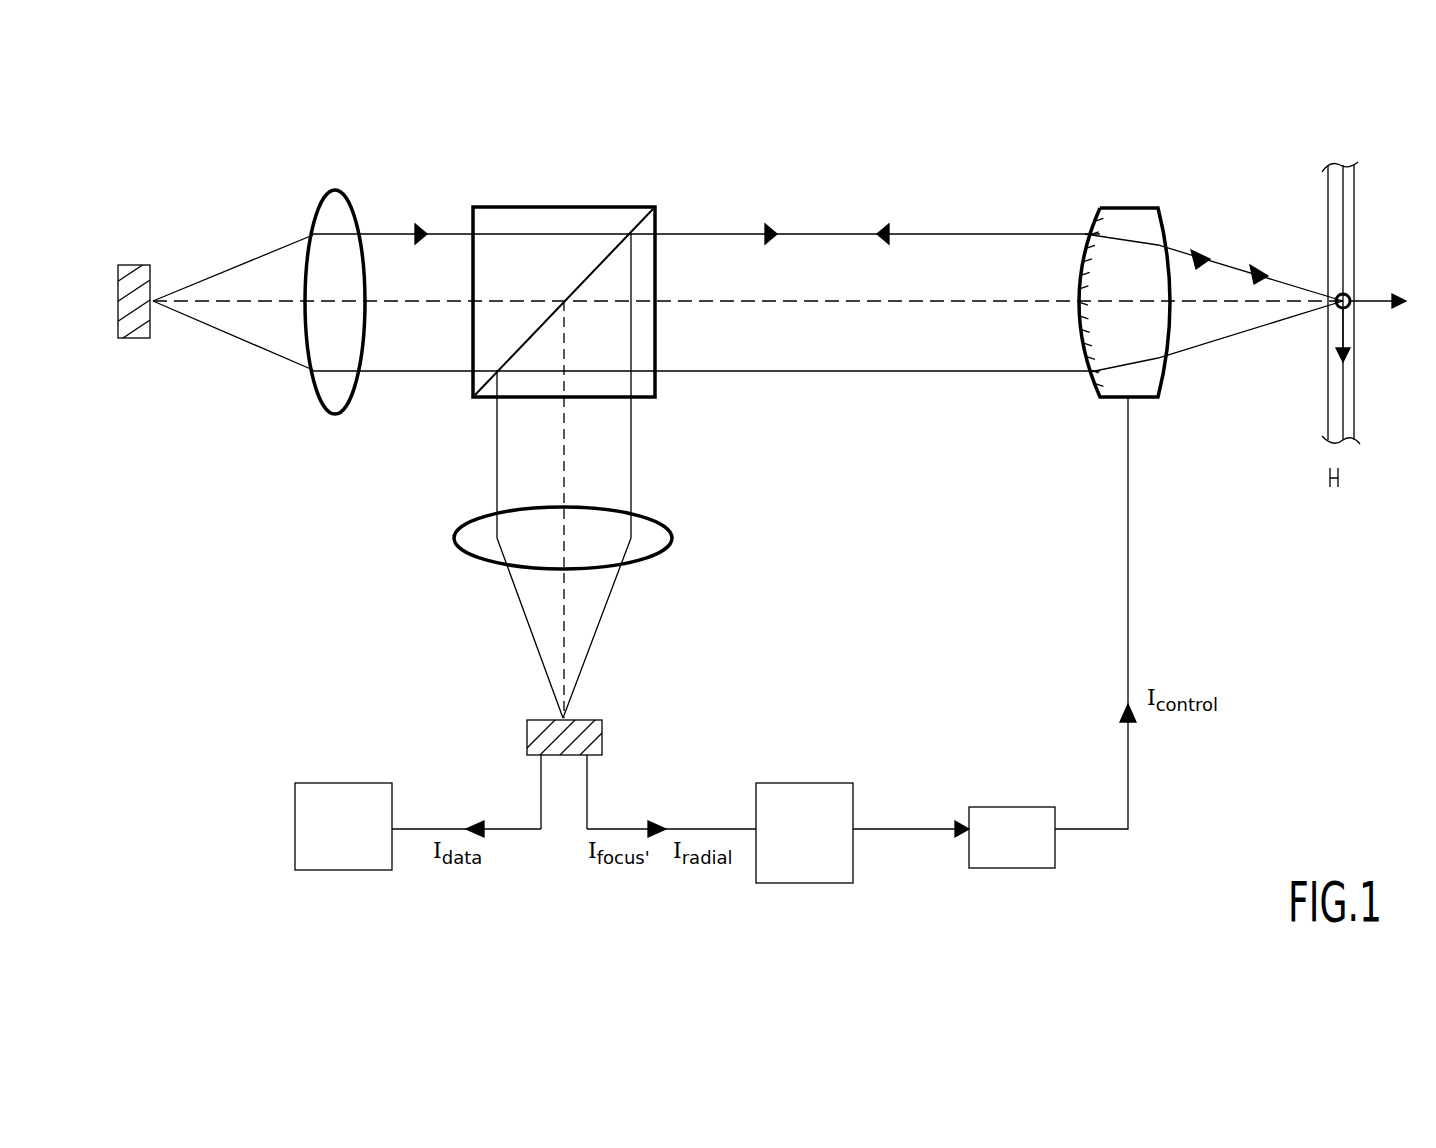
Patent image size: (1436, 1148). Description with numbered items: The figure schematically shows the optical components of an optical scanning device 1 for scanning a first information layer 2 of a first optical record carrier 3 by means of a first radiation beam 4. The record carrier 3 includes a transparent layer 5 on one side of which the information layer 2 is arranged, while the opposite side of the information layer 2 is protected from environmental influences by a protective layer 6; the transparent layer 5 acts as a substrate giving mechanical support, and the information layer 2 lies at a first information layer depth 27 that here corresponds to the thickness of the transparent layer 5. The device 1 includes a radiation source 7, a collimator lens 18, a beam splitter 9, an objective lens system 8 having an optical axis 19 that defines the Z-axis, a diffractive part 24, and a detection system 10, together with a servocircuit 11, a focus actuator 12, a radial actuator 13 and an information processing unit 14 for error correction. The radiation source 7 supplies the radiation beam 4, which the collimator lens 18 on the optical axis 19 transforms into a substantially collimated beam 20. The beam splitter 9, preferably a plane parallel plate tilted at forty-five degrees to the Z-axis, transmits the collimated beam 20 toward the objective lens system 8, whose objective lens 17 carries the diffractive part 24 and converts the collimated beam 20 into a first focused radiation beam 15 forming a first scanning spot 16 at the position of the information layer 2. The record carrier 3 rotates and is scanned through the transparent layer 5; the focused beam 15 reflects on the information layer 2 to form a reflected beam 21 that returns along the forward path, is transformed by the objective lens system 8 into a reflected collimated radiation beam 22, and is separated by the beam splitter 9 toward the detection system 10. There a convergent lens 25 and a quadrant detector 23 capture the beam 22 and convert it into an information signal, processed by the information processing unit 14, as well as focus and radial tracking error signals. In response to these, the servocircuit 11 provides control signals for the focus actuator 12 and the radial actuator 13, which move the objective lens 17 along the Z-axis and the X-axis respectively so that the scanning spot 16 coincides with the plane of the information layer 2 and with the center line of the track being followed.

The optical scanning device 1 is at (127, 138).
The first information layer 2 is at (1343, 196).
The first optical record carrier 3 is at (1414, 139).
The first radiation beam 4 is at (225, 270).
The transparent layer 5 is at (1334, 239).
The protective layer 6 is at (1349, 410).
The radiation source 7 is at (133, 265).
The objective lens system 8 is at (1026, 442).
The beam splitter 9 is at (530, 205).
The detection system 10 is at (733, 498).
The servocircuit 11 is at (853, 865).
The focus actuator 12 is at (1018, 639).
The radial actuator 13 is at (1055, 855).
The information processing unit 14 is at (295, 823).
The first focused radiation beam 15 is at (1256, 270).
The first scanning spot 16 is at (1343, 288).
The objective lens 17 is at (1118, 207).
The collimator lens 18 is at (345, 192).
The optical axis 19 is at (887, 302).
The collimated beam 20 is at (418, 225).
The reflected beam 21 is at (1198, 253).
The reflected collimated radiation beam 22 is at (767, 222).
The quadrant detector 23 is at (527, 735).
The diffractive part 24 is at (1100, 383).
The convergent lens 25 is at (455, 548).
The first information layer depth 27 is at (1334, 490).